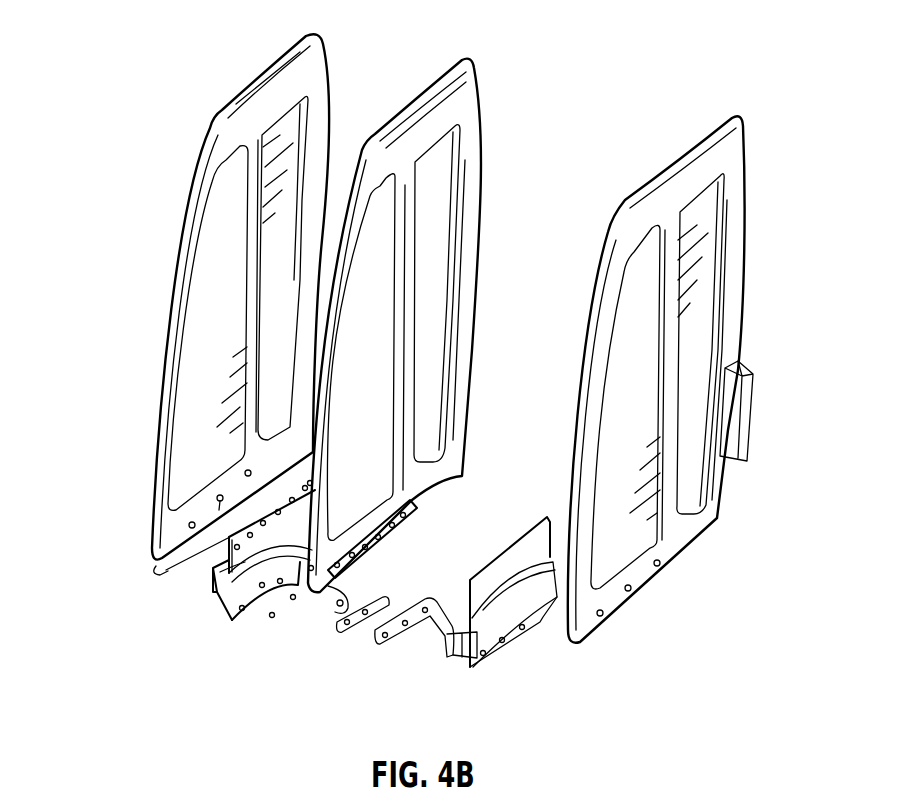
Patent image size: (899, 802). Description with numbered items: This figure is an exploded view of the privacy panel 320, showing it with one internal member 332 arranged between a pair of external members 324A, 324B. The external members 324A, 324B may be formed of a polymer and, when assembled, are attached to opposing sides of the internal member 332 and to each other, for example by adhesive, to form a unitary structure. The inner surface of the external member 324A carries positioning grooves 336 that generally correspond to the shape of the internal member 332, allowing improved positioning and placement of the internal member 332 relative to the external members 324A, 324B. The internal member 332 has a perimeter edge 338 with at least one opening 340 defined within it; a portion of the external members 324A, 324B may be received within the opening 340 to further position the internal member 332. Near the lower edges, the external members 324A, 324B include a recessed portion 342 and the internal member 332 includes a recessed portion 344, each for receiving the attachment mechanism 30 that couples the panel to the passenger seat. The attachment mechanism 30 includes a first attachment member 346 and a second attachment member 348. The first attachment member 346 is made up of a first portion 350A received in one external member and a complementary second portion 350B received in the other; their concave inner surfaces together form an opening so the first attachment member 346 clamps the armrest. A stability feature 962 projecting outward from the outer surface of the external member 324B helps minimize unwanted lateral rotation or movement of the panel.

The attachment mechanism 30 is at (383, 660).
The privacy panel 320 is at (114, 30).
The external member 324A is at (247, 137).
The external member 324B is at (731, 113).
The internal member 332 is at (454, 86).
The positioning grooves 336 is at (260, 103).
The perimeter edge 338 is at (400, 118).
The opening 340 is at (450, 233).
The recessed portion 342 is at (200, 552).
The recessed portion 344 is at (402, 517).
The first attachment member 346 is at (243, 583).
The second attachment member 348 is at (289, 617).
The first portion 350A is at (225, 585).
The second portion 350B is at (502, 645).
The stability feature 962 is at (747, 417).